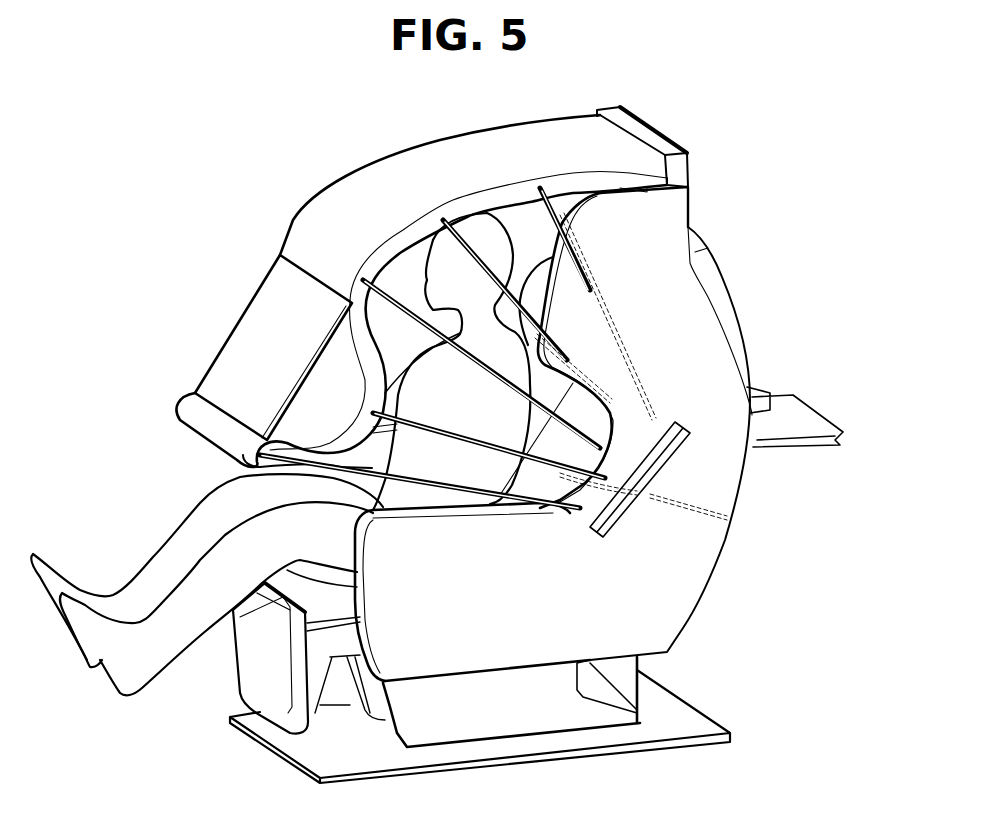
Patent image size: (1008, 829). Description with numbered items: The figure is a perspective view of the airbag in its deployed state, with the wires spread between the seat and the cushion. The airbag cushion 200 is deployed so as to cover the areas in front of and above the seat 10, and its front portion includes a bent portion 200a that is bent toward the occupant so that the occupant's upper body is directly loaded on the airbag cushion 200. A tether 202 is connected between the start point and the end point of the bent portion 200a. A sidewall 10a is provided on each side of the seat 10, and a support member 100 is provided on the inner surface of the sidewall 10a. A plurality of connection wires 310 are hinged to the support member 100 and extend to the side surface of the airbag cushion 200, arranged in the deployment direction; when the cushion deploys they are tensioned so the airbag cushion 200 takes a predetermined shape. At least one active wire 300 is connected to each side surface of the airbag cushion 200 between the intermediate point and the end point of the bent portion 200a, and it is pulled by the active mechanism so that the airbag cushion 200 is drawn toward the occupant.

The airbag cushion 200 is at (338, 207).
The tether 202 is at (268, 308).
The bent portion 200a is at (332, 392).
The seat 10 is at (728, 540).
The sidewall 10a is at (650, 624).
The support member 100 is at (650, 470).
The active wire 300 is at (653, 503).
The connection wire 310 is at (567, 363).